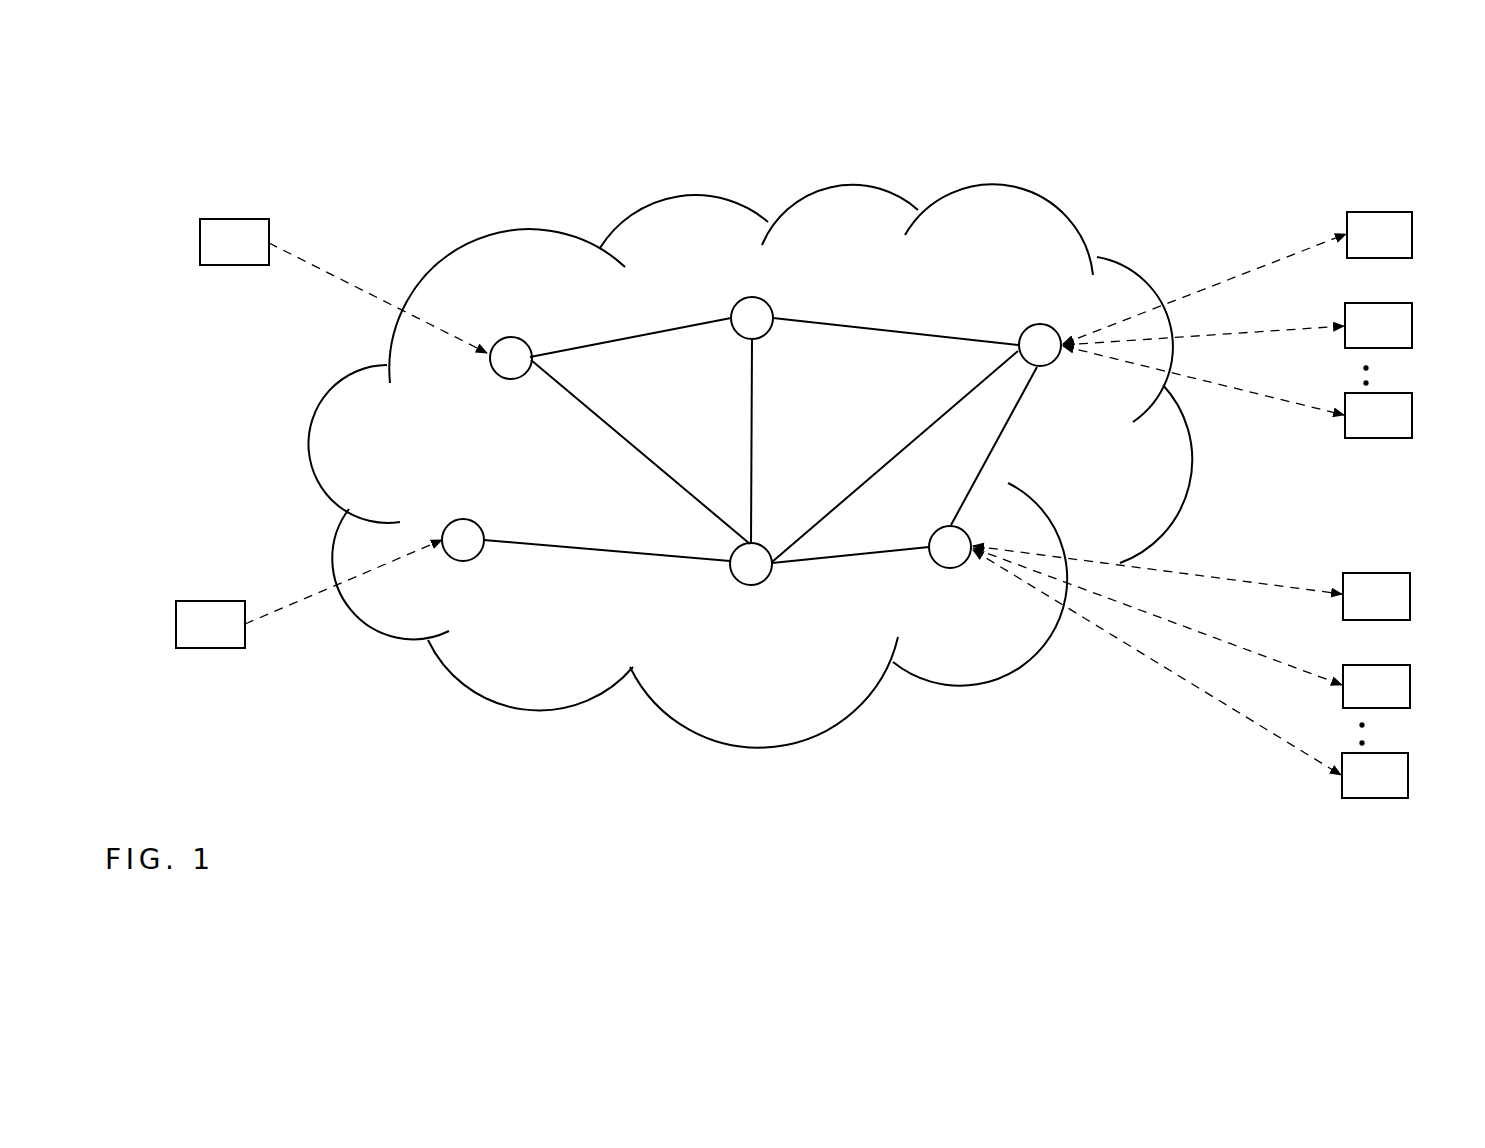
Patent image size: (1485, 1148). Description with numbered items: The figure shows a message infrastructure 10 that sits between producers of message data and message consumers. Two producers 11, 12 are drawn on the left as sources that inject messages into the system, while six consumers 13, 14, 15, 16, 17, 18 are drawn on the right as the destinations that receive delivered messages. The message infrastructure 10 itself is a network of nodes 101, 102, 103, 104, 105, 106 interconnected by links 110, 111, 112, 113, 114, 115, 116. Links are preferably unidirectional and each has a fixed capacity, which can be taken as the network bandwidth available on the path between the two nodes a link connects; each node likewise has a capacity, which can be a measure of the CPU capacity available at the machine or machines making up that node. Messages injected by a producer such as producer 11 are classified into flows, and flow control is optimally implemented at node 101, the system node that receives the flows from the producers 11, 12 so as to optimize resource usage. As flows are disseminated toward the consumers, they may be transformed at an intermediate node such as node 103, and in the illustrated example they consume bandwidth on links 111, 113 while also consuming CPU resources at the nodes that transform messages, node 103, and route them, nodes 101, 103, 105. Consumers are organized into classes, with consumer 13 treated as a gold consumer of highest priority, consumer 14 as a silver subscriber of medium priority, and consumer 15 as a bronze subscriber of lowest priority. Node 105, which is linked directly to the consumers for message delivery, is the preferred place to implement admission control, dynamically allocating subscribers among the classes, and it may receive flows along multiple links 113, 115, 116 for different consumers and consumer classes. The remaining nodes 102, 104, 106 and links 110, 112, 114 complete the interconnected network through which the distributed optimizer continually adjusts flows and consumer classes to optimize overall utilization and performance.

The message infrastructure 10 is at (515, 232).
The producer 11 is at (200, 245).
The producer 12 is at (176, 636).
The consumer 13 is at (1412, 245).
The consumer 14 is at (1412, 338).
The consumer 15 is at (1412, 430).
The consumer 16 is at (1410, 598).
The consumer 17 is at (1412, 705).
The consumer 18 is at (1408, 780).
The node 101 is at (505, 340).
The node 102 is at (446, 525).
The node 103 is at (733, 305).
The node 104 is at (727, 576).
The node 105 is at (1023, 328).
The node 106 is at (947, 570).
The link A-D 110 is at (598, 420).
The link 111 is at (625, 331).
The link 112 is at (534, 547).
The link 113 is at (862, 318).
The link 114 is at (858, 558).
The link 115 is at (905, 438).
The link 116 is at (1013, 410).